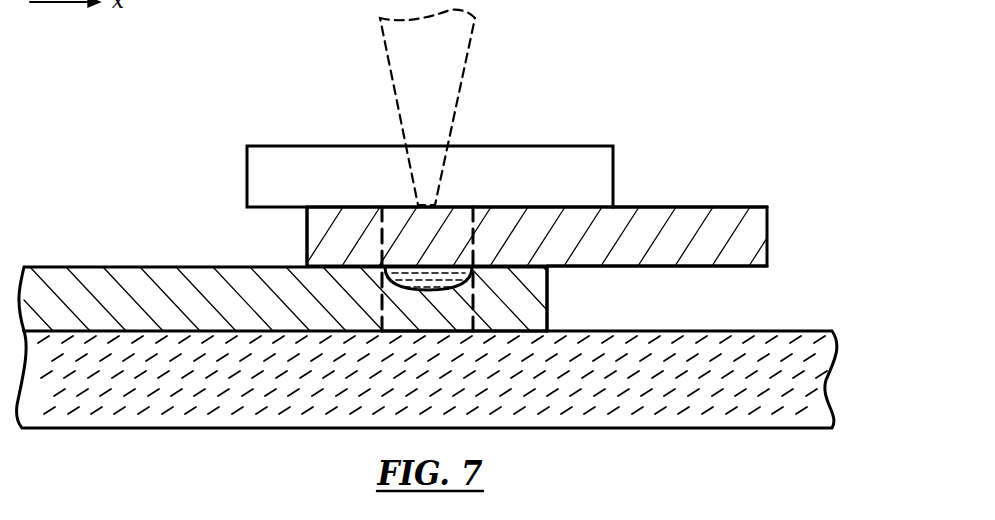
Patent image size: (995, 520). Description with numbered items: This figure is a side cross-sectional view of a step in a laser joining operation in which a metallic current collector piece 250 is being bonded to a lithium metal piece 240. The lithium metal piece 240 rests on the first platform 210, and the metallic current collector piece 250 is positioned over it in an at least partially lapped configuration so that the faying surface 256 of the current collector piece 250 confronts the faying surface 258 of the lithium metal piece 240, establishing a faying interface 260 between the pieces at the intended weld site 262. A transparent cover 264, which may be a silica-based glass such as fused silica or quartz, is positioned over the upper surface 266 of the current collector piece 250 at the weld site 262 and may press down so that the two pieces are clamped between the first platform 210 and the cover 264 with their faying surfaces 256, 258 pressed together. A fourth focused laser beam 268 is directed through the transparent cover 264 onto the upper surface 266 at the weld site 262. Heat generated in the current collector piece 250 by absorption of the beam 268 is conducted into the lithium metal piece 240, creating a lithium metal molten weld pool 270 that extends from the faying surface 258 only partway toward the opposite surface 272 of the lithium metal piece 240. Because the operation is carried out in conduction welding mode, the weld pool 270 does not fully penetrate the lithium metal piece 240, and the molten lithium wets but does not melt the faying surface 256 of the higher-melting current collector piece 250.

The first platform 210 is at (242, 431).
The lithium metal piece 240 is at (90, 262).
The metallic current collector piece 250 is at (767, 233).
The faying surface of the metallic current collector piece 256 is at (547, 285).
The faying surface of the lithium metal piece 258 is at (313, 263).
The faying interface 260 is at (555, 270).
The weld site 262 is at (380, 238).
The transparent cover 264 is at (571, 146).
The upper surface of the metallic current collector piece 266 is at (722, 205).
The fourth focused laser beam 268 is at (383, 48).
The lithium metal molten weld pool 270 is at (413, 291).
The opposite surface of the lithium metal piece 272 is at (445, 333).